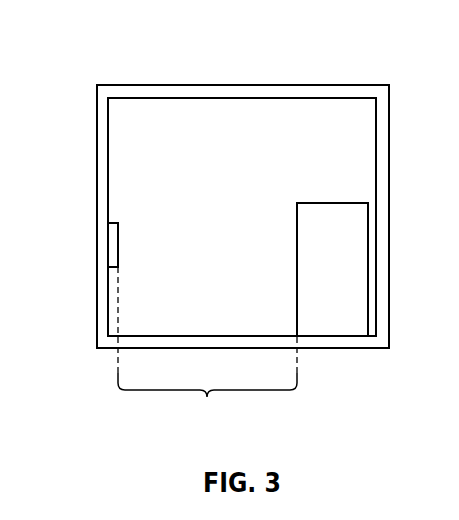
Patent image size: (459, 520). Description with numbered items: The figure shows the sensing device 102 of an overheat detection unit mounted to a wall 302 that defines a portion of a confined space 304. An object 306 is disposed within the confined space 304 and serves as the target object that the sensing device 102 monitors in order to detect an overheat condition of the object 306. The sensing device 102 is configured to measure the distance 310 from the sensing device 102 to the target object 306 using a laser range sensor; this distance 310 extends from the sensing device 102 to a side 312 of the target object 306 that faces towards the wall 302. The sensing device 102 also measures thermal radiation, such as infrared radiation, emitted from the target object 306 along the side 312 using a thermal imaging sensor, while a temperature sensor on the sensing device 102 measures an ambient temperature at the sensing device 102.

The wall 302 is at (103, 126).
The confined space 304 is at (150, 108).
The sensing device 102 is at (116, 232).
The object 306 is at (354, 265).
The side 312 is at (295, 230).
The distance 310 is at (207, 397).